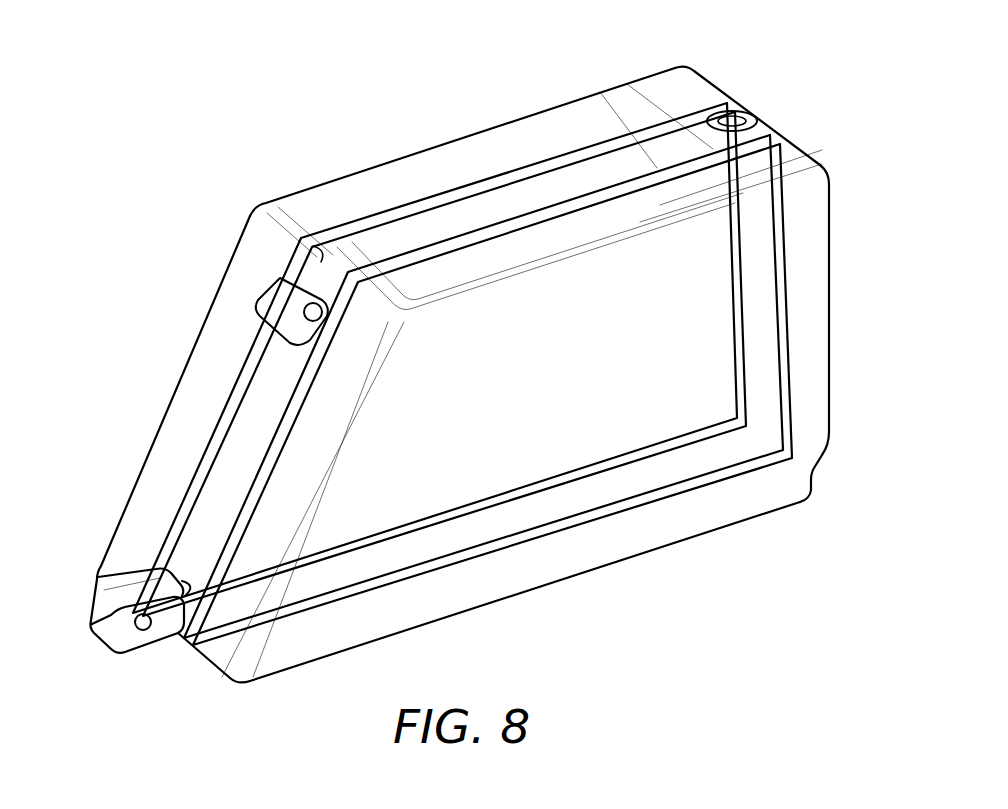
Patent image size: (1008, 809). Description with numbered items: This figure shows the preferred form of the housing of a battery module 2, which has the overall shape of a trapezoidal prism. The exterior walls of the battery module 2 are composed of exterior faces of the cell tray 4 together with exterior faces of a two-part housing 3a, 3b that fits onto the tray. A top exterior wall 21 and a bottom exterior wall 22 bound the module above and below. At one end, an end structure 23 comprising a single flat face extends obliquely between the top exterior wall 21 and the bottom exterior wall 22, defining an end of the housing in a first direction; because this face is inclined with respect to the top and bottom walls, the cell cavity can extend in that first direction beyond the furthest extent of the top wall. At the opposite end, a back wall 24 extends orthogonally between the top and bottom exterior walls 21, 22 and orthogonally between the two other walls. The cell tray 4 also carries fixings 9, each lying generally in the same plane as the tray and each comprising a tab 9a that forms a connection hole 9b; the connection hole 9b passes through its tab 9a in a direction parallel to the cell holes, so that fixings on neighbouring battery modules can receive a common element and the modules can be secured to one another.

The battery module 2 is at (200, 113).
The top exterior wall 21 is at (403, 167).
The bottom exterior wall 22 is at (577, 576).
The end structure 23 is at (163, 436).
The back wall 24 is at (832, 266).
The housing part 3a is at (765, 366).
The housing part 3b is at (690, 84).
The cell tray 4 is at (523, 188).
The fixing 9 is at (80, 610).
The tab 9a is at (263, 310).
The connection hole 9b is at (310, 305).